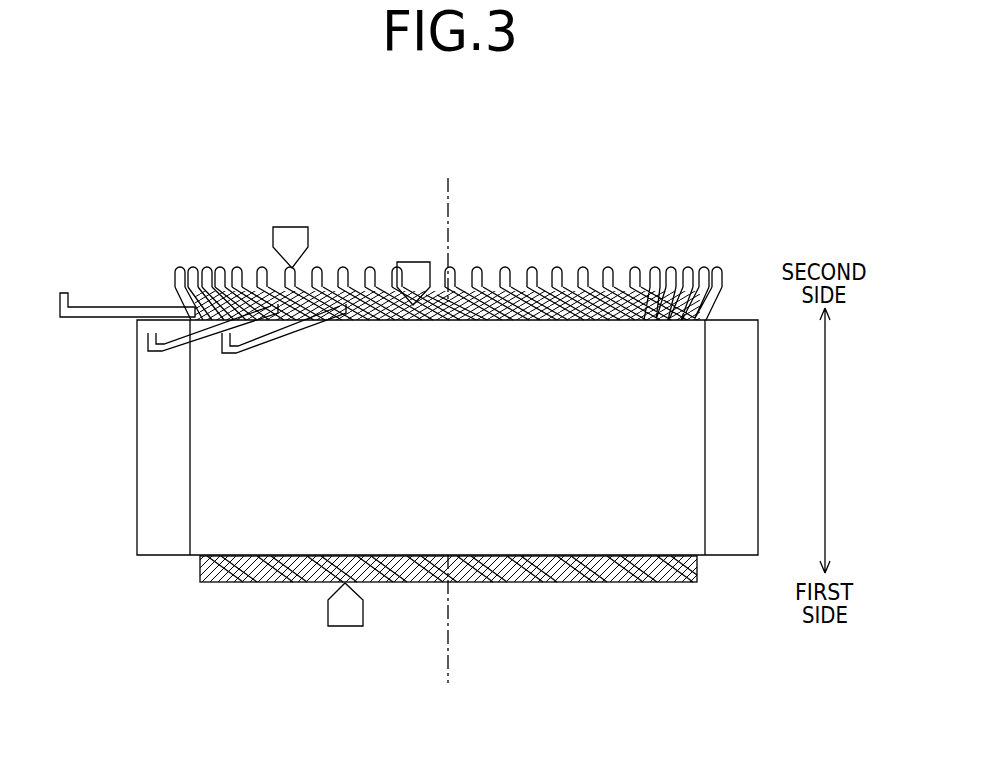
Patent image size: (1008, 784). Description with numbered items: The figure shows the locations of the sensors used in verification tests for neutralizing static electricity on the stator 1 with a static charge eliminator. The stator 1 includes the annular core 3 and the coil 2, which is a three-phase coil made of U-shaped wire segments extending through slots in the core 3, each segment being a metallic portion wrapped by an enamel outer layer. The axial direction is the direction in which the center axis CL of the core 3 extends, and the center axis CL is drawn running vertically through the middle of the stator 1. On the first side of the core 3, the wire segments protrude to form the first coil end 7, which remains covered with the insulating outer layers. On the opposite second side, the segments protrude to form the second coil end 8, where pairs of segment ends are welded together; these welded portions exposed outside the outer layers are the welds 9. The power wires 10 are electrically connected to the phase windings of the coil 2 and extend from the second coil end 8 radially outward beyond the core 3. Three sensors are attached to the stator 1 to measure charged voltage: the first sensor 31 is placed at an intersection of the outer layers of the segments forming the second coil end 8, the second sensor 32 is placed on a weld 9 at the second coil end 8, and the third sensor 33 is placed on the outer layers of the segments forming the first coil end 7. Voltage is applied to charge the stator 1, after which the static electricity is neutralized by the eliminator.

The stator 1 is at (547, 171).
The coil 2 is at (500, 594).
The core 3 is at (213, 493).
The first coil end 7 is at (717, 577).
The second coil end 8 is at (734, 284).
The welds 9 is at (296, 270).
The power wires 10 is at (101, 307).
The first sensor 31 is at (411, 262).
The second sensor 32 is at (288, 227).
The third sensor 33 is at (345, 627).
The center axis CL is at (450, 192).